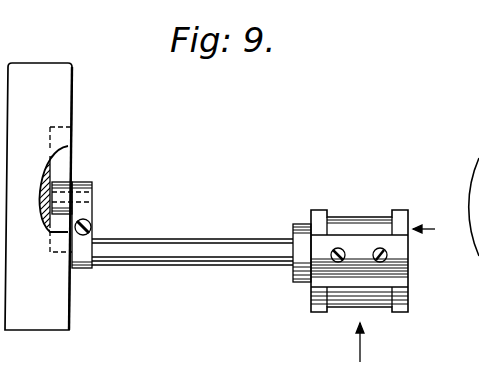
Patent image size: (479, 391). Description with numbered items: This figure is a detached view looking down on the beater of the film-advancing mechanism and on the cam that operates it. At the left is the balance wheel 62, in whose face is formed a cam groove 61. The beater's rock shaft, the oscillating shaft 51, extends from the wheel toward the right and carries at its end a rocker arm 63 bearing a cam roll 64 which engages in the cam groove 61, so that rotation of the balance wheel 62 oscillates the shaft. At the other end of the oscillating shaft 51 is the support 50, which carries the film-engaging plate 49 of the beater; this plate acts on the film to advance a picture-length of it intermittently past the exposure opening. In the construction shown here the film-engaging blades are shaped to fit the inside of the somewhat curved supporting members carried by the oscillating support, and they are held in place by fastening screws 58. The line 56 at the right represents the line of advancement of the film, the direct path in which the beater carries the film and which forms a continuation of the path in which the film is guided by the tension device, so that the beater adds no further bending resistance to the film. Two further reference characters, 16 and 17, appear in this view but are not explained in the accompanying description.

The balance wheel 62 is at (64, 98).
The cam groove 61 is at (57, 166).
The cam roll 64 is at (72, 181).
The rocker arm 63 is at (90, 214).
The oscillating shaft 51 is at (194, 247).
The support 50 is at (303, 224).
The film-engaging plate 49 is at (400, 285).
The fastening screws 58 is at (378, 248).
The arrow 16 is at (438, 229).
The arrow 17 is at (360, 354).
The line of advancement 56 is at (477, 103).